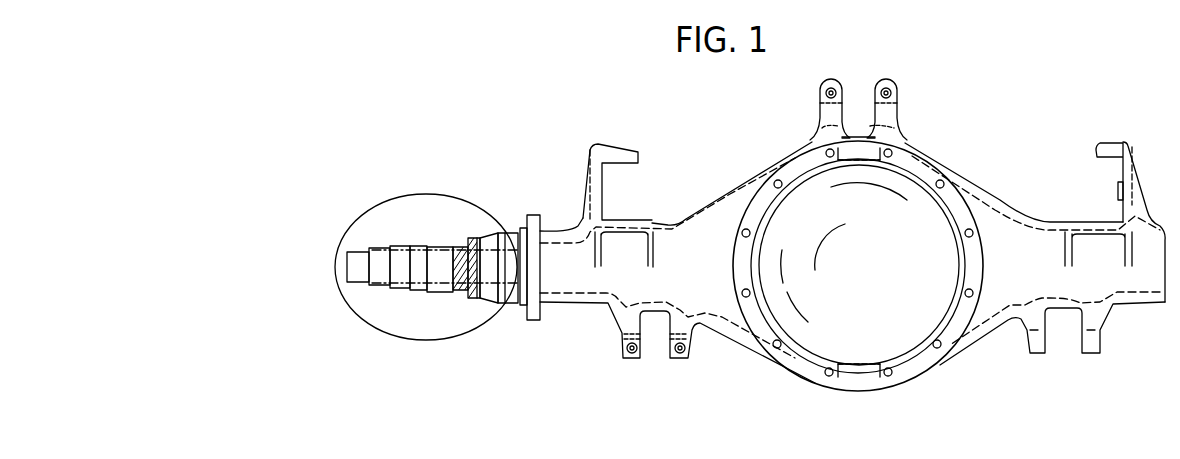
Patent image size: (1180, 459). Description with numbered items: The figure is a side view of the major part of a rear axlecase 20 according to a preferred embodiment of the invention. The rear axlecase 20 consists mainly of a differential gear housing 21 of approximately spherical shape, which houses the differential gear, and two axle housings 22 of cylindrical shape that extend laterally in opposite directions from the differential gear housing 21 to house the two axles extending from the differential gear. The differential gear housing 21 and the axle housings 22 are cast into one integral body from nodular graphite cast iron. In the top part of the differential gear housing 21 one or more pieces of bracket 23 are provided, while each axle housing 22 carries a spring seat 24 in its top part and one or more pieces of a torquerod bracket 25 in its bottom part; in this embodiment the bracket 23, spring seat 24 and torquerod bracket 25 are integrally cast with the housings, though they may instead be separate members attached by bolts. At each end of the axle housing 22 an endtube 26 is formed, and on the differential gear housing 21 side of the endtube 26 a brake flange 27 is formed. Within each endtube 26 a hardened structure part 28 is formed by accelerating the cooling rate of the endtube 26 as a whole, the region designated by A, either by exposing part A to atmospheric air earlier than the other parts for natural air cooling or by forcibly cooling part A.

The rear axlecase 20 is at (681, 164).
The differential gear housing 21 is at (940, 360).
The axle housing 22 is at (565, 306).
The bracket 23 is at (899, 94).
The spring seat 24 is at (601, 144).
The torquerod bracket 25 is at (692, 350).
The endtube 26 is at (400, 239).
The brake flange 27 is at (531, 214).
The hardened structure part 28 is at (460, 298).
The part A is at (400, 340).